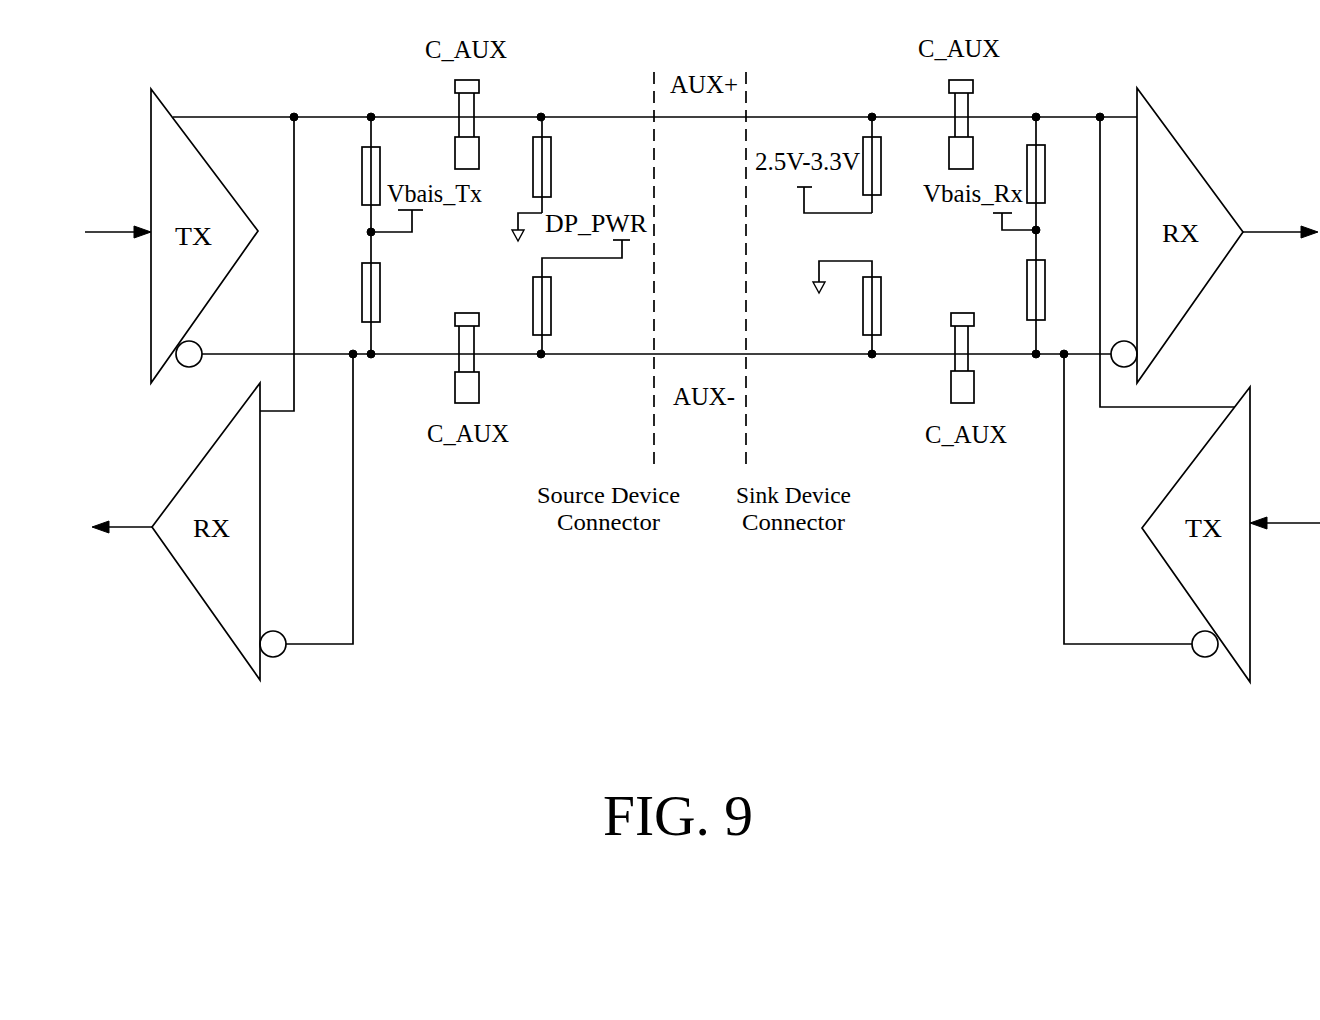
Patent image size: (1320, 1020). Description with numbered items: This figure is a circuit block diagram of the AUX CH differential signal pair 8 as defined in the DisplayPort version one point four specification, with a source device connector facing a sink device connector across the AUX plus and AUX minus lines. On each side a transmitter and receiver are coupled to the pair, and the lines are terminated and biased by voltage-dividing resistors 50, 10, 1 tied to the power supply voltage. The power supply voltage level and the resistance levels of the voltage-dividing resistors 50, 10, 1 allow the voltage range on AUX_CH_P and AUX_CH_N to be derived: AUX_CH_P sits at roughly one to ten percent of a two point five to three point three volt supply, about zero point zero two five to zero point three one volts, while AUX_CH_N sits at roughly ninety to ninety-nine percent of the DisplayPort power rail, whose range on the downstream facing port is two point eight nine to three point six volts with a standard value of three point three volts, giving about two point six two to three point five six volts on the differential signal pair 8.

The differential signal bus line 8 is at (100, 260).
The 50 ohm termination resistor 50 is at (701, 235).
The 10k-105k ohm pull resistor 10 is at (571, 235).
The 1M ohm bias resistor 1 is at (870, 235).